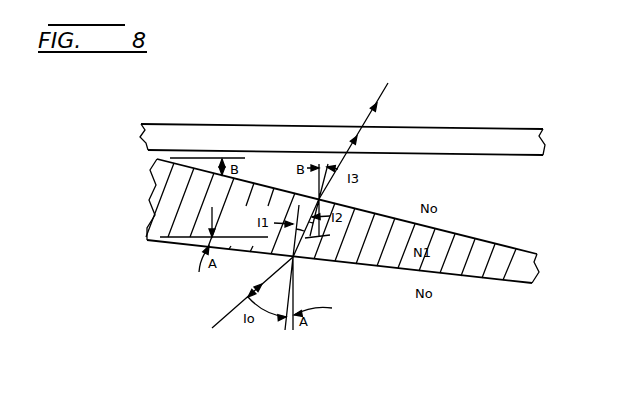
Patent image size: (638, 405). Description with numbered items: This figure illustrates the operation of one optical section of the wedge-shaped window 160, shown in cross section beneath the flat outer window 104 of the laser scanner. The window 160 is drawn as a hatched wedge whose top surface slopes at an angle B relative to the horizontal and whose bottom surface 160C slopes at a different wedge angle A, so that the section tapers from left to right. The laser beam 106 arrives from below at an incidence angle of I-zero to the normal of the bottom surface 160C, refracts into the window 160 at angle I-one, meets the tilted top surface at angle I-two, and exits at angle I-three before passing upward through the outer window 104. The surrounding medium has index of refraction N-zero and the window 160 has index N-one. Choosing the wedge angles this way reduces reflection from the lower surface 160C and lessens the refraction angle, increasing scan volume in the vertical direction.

The outer window 104 is at (497, 130).
The laser beam 106 is at (388, 84).
The window 160 is at (488, 243).
The bottom surface 160C is at (483, 278).